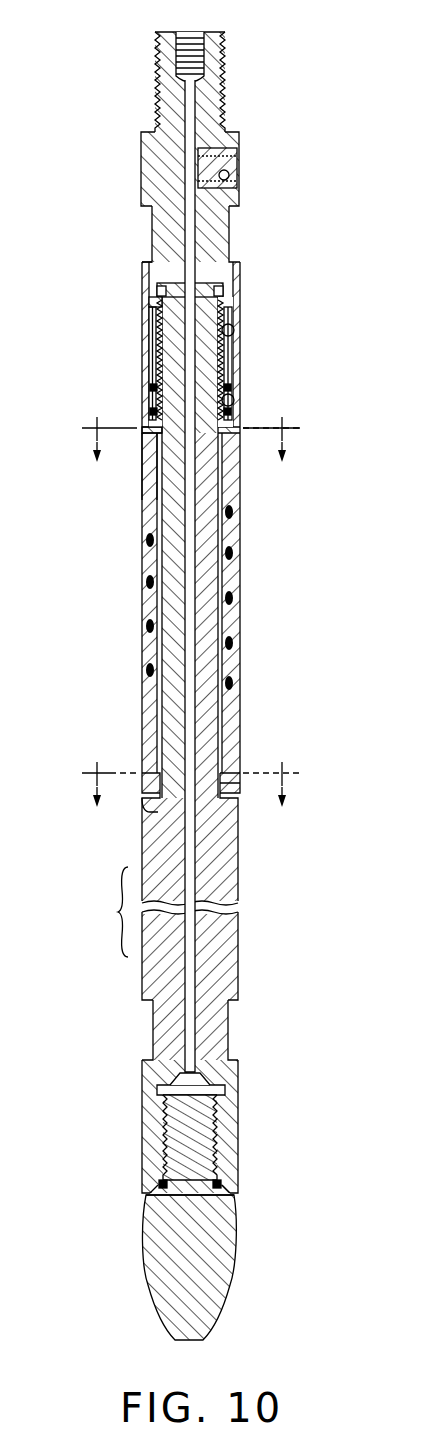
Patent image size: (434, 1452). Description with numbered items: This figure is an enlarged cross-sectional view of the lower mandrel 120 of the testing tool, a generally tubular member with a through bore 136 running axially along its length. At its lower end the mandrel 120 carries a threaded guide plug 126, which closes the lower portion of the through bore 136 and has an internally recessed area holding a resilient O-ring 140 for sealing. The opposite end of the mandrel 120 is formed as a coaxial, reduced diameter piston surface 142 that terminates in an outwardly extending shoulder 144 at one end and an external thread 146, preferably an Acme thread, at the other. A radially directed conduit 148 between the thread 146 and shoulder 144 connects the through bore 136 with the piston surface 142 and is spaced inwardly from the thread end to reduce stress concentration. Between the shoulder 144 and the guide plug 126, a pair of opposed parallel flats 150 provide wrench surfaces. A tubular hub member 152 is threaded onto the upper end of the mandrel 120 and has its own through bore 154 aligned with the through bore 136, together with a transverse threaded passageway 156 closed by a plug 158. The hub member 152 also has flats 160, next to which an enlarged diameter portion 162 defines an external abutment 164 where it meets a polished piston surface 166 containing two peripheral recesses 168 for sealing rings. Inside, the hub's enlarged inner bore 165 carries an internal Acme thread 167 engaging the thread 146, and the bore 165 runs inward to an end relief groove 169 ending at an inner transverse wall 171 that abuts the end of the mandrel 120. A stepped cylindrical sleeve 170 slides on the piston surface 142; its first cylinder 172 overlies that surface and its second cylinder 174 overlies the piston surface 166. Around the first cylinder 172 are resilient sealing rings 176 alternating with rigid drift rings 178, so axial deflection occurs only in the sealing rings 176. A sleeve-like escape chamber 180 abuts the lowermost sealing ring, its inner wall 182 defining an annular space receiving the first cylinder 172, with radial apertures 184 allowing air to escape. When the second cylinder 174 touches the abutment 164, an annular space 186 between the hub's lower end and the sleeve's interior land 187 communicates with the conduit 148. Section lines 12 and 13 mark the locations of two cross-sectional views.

The section line 12- 12 is at (197, 439).
The section line 13- 13 is at (197, 784).
The lower mandrel 120 is at (222, 860).
The guide plug 126 is at (205, 1270).
The through bore 136 is at (200, 953).
The O-ring 140 is at (218, 1184).
The piston surface 142 is at (170, 598).
The shoulder 144 is at (150, 812).
The external thread 146 is at (228, 338).
The radially directed conduit 148 is at (238, 410).
The flats 150 is at (152, 1022).
The hub member 152 is at (172, 85).
The through bore 154 is at (200, 223).
The transverse threaded passageway 156 is at (234, 213).
The plug 158 is at (232, 137).
The flats 160 is at (151, 237).
The enlarged diameter portion 162 is at (226, 271).
The external abutment 164 is at (149, 303).
The enlarged inner bore 165 is at (234, 376).
The piston surface 166 is at (149, 328).
The internal Acme thread 167 is at (226, 299).
The peripheral recesses 168 is at (149, 412).
The end relief groove 169 is at (156, 291).
The cylindrical sleeve 170 is at (246, 471).
The inner transverse wall 171 is at (143, 262).
The first cylinder 172 is at (158, 646).
The second cylinder 174 is at (147, 360).
The sealing rings 176 is at (240, 511).
The drift rings 178 is at (232, 553).
The escape chamber 180 is at (148, 736).
The inner wall 182 is at (233, 719).
The radial apertures 184 is at (237, 757).
The annular space 186 is at (144, 432).
The interior land 187 is at (141, 448).